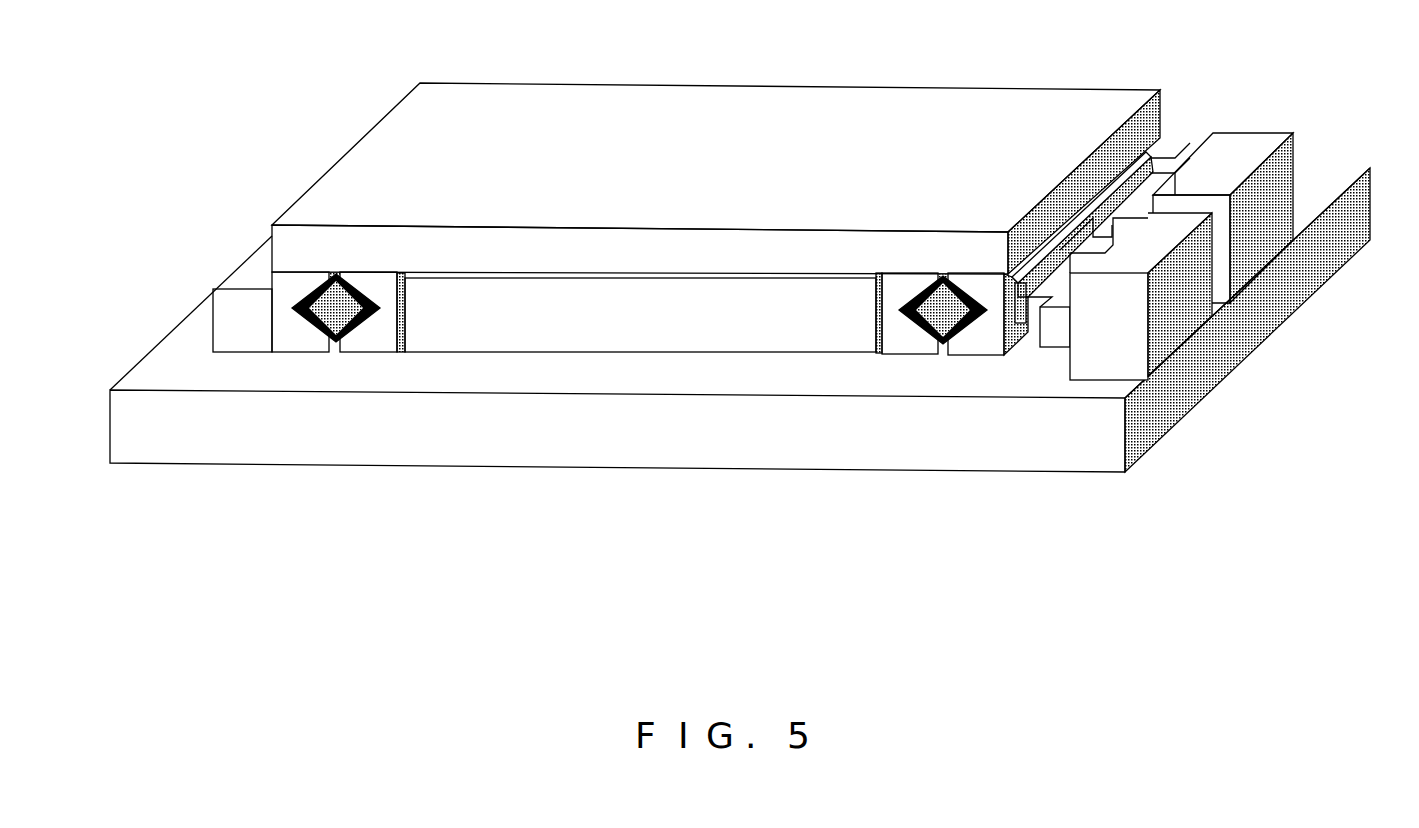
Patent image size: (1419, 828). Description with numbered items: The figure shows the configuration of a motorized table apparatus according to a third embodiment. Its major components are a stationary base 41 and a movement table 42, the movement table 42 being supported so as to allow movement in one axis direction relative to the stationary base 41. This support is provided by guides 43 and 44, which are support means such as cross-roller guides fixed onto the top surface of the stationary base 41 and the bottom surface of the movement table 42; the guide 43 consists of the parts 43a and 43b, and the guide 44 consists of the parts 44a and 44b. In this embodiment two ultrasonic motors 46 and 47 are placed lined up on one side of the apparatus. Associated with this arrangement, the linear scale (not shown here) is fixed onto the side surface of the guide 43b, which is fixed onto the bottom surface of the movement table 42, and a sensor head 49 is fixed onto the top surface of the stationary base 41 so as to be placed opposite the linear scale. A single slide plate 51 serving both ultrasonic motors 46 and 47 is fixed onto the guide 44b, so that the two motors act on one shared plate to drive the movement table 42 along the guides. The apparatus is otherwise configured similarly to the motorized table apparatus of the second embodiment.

The stationary base 41 is at (126, 375).
The movement table 42 is at (367, 132).
The guide 43 is at (334, 434).
The guide 43a is at (370, 352).
The guide 43b is at (302, 352).
The guide 44 is at (943, 439).
The guide 44a is at (907, 355).
The guide 44b is at (975, 355).
The ultrasonic motor 46 is at (1173, 320).
The ultrasonic motor 47 is at (1260, 247).
The sensor head 49 is at (212, 320).
The slide plate 51 is at (1090, 213).